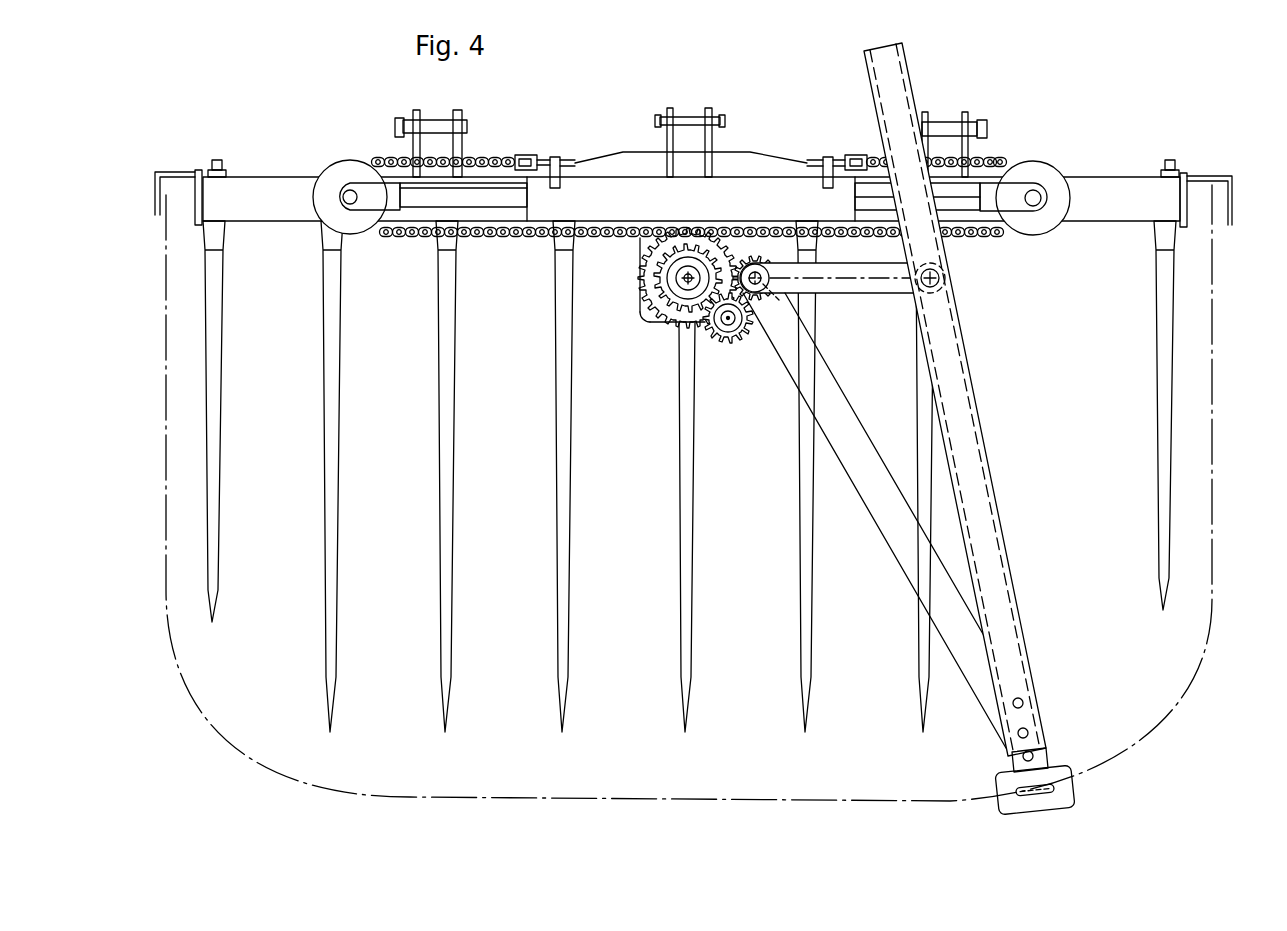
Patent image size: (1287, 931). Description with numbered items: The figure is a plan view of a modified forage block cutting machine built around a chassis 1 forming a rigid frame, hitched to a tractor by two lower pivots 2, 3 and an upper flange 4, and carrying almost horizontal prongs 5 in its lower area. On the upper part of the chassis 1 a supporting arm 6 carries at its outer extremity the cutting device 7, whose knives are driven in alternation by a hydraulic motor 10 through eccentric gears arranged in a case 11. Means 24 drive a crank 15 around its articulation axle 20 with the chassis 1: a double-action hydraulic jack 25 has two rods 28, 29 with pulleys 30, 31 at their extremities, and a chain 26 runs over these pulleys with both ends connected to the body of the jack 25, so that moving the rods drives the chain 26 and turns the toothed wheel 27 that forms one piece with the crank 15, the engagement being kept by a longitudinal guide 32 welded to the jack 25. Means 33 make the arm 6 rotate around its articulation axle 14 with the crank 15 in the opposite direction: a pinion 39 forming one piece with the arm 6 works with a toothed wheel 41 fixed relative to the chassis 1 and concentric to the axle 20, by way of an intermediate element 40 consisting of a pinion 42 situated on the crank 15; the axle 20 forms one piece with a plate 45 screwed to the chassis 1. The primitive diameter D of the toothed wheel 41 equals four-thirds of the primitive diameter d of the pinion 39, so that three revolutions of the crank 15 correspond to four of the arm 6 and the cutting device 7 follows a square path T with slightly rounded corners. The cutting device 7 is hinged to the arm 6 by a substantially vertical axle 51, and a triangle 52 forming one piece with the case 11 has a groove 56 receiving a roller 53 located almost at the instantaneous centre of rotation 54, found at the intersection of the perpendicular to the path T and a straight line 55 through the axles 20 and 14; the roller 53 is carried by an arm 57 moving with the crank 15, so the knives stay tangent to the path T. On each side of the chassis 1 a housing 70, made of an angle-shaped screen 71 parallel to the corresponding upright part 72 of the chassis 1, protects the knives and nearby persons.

The chassis 1 is at (262, 205).
The lower pivot 2 is at (402, 125).
The lower pivot 3 is at (960, 125).
The upper flange 4 is at (708, 142).
The prongs 5 is at (446, 597).
The supporting arm 6 is at (920, 566).
The cutting device 7 is at (1068, 762).
The hydraulic motor 10 is at (1012, 766).
The case 11 is at (1000, 788).
The articulation axle 14 is at (758, 277).
The crank 15 is at (702, 313).
The articulation axle 20 is at (683, 282).
The drive means 24 is at (538, 240).
The double-action hydraulic jack 25 is at (590, 198).
The chain 26 is at (400, 242).
The toothed wheel 27 is at (652, 266).
The jack rod 28 is at (490, 196).
The jack rod 29 is at (880, 196).
The pulley 30 is at (340, 172).
The pulley 31 is at (1045, 175).
The longitudinal guide 32 is at (650, 233).
The rotation means 33 is at (633, 303).
The pinion 39 is at (752, 256).
The intermediate element 40 is at (748, 342).
The toothed wheel 41 is at (662, 296).
The pinion 42 is at (727, 342).
The plate 45 is at (650, 321).
The vertical axle 51 is at (1036, 742).
The triangle 52 is at (1000, 536).
The roller 53 is at (940, 286).
The instantaneous centre of rotation 54 is at (934, 278).
The straight line 55 is at (890, 293).
The groove 56 is at (965, 372).
The arm 57 is at (843, 293).
The housing 70 is at (178, 172).
The screen 71 is at (157, 178).
The upright part 72 is at (216, 170).
The primitive diameter D is at (688, 240).
The primitive diameter d is at (752, 254).
The path T is at (812, 800).